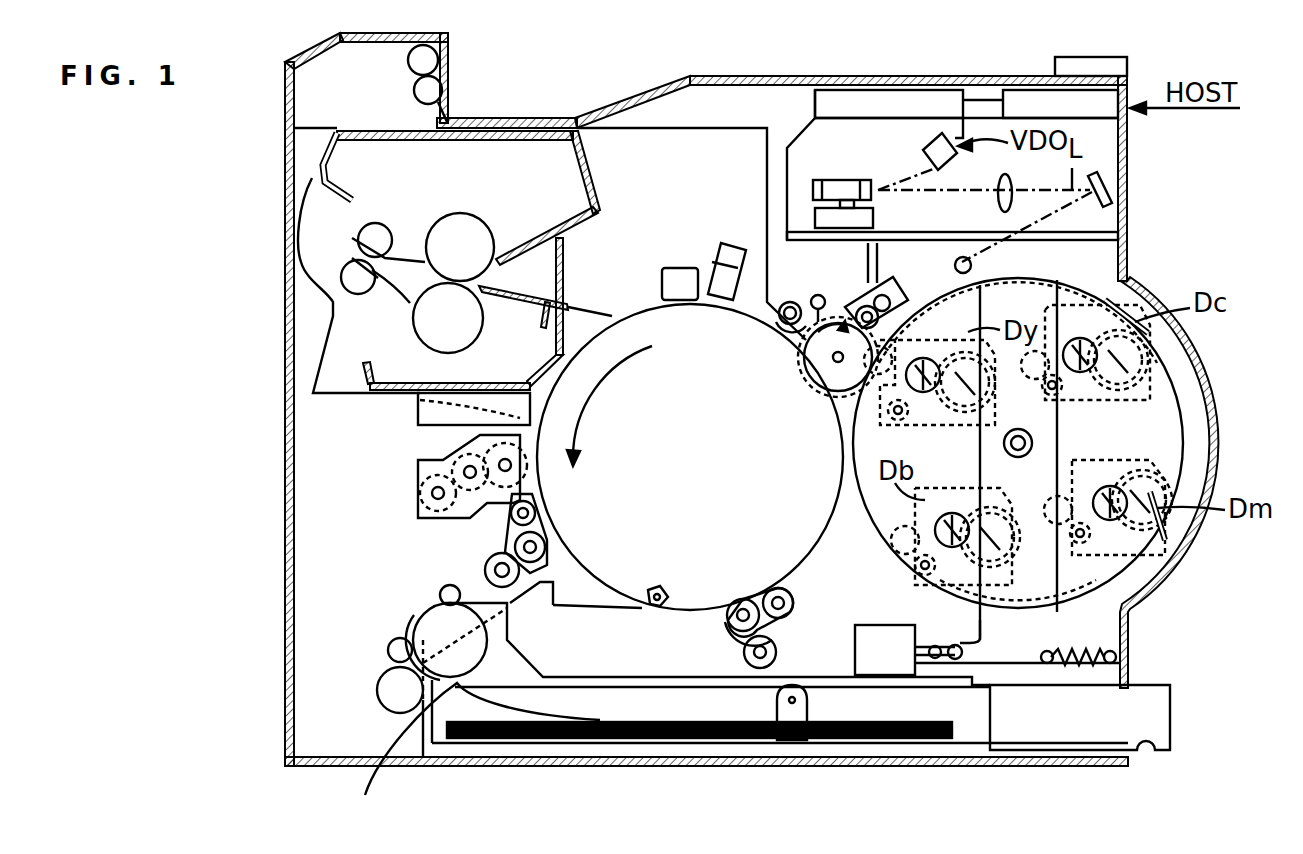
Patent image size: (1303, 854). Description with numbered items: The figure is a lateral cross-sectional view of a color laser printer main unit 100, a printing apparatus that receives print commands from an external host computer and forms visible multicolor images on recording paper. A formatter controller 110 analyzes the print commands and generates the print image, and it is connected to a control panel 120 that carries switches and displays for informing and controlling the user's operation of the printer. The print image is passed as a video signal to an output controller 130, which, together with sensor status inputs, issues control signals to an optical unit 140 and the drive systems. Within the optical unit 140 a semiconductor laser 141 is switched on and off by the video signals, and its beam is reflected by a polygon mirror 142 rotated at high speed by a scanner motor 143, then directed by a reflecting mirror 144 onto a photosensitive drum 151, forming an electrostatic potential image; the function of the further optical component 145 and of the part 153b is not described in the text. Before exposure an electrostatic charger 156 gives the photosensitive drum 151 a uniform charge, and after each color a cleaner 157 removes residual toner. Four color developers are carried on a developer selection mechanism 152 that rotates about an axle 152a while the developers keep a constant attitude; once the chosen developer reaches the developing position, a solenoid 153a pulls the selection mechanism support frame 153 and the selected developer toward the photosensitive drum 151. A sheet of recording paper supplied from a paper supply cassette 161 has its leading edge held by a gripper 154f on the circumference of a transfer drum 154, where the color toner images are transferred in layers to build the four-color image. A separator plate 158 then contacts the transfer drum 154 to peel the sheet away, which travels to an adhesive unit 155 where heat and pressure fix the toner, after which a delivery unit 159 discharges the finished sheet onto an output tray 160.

The color laser printer main unit 100 is at (710, 770).
The formatter controller 110 is at (1022, 102).
The control panel 120 is at (1128, 66).
The output controller 130 is at (852, 102).
The optical unit 140 is at (812, 150).
The semiconductor laser 141 is at (937, 132).
The polygon mirror 142 is at (848, 180).
The scanner motor 143 is at (815, 216).
The reflecting mirror 144 is at (1020, 200).
The reflecting mirror 145 is at (1112, 188).
The photosensitive drum 151 is at (814, 388).
The developer selection mechanism 152 is at (1172, 385).
The axle 152a is at (1032, 443).
The selection mechanism support frame 153 is at (1047, 632).
The solenoid 153a is at (868, 645).
The pivot 153b is at (963, 257).
The transfer drum 154 is at (800, 530).
The gripper 154f is at (660, 585).
The adhesive unit 155 is at (337, 318).
The electrostatic charger 156 is at (902, 297).
The cleaner 157 is at (813, 297).
The separator plate 158 is at (603, 316).
The delivery unit 159 is at (443, 73).
The output tray 160 is at (547, 117).
The paper supply cassette 161 is at (1140, 718).